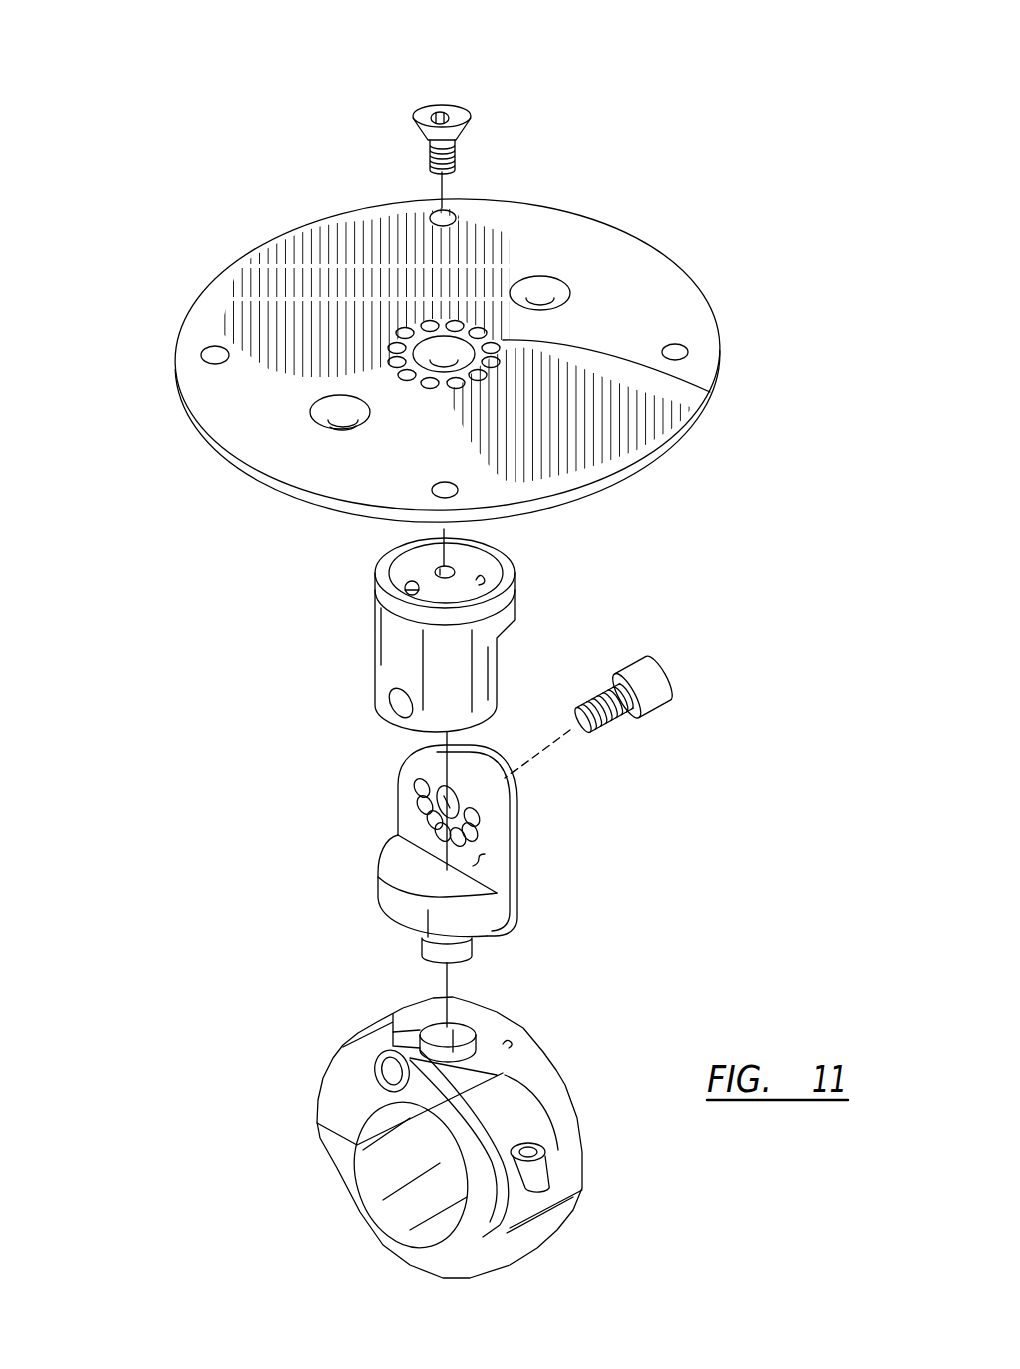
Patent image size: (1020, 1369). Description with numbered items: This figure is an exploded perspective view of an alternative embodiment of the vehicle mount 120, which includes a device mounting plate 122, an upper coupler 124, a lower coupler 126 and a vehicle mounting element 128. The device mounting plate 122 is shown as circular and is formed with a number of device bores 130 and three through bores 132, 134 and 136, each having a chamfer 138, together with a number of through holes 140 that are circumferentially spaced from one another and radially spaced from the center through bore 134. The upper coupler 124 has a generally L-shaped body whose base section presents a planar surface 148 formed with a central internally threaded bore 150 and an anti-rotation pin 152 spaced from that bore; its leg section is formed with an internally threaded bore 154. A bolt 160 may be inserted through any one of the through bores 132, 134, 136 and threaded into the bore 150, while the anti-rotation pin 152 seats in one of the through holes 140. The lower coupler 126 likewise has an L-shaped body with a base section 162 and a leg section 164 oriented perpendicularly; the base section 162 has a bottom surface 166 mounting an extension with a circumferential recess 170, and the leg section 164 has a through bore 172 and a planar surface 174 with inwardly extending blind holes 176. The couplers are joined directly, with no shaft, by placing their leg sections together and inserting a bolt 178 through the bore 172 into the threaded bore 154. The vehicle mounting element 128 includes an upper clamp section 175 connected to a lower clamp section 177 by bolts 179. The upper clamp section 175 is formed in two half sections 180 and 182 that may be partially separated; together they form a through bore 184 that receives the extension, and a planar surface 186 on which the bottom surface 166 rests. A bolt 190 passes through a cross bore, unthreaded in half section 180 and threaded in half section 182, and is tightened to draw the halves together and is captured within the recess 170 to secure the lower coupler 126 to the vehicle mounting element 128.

The vehicle mount 120 is at (748, 106).
The device mounting plate 122 is at (694, 249).
The upper coupler 124 is at (402, 634).
The lower coupler 126 is at (415, 854).
The vehicle mounting element 128 is at (479, 1149).
The device bores 130 is at (448, 210).
The through bore 132 is at (330, 427).
The center through bore 134 is at (492, 371).
The through bore 136 is at (546, 302).
The chamfer 138 is at (537, 278).
The through holes 140 is at (433, 317).
The planar surface 148 is at (478, 583).
The internally threaded bore 150 is at (455, 570).
The anti-rotation pin 152 is at (403, 584).
The internally threaded bore 154 is at (390, 702).
The bolt 160 is at (418, 108).
The base section 162 is at (383, 882).
The leg section 164 is at (518, 832).
The bottom surface 166 is at (422, 940).
The circumferential recess 170 is at (473, 943).
The through bore 172 is at (458, 801).
The planar surface 174 is at (497, 874).
The upper clamp section 175 is at (298, 1032).
The blind holes 176 is at (430, 818).
The lower clamp section 177 is at (338, 1277).
The bolt 178 is at (668, 658).
The bolts 179 is at (548, 1152).
The half section 180 is at (330, 1095).
The half section 182 is at (553, 1070).
The through bore 184 is at (467, 1028).
The planar surface 186 is at (510, 1040).
The bolt 190 is at (317, 1123).